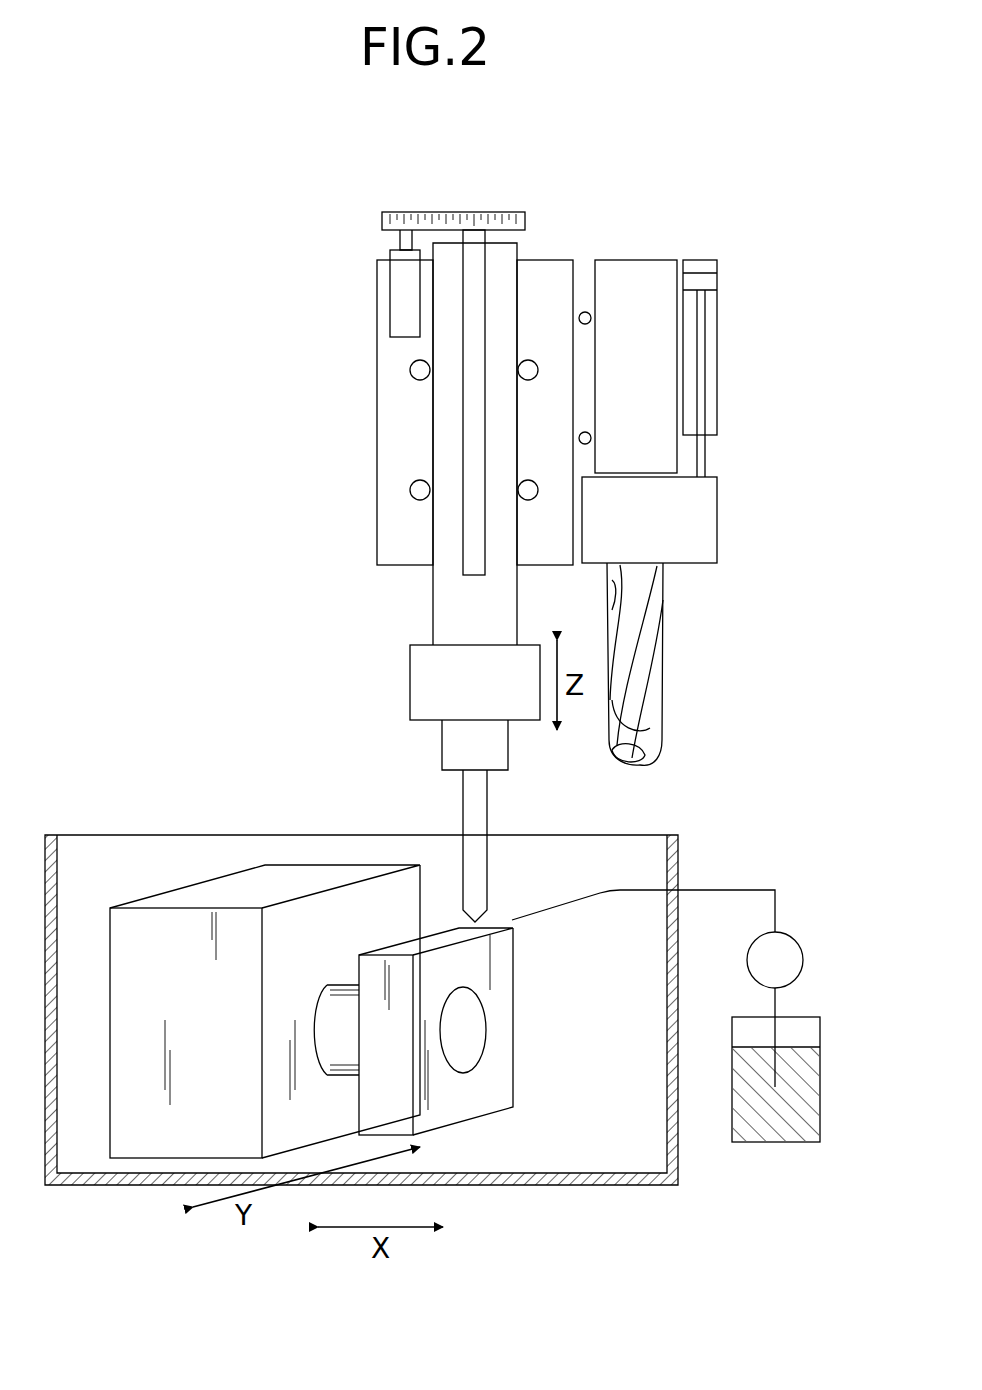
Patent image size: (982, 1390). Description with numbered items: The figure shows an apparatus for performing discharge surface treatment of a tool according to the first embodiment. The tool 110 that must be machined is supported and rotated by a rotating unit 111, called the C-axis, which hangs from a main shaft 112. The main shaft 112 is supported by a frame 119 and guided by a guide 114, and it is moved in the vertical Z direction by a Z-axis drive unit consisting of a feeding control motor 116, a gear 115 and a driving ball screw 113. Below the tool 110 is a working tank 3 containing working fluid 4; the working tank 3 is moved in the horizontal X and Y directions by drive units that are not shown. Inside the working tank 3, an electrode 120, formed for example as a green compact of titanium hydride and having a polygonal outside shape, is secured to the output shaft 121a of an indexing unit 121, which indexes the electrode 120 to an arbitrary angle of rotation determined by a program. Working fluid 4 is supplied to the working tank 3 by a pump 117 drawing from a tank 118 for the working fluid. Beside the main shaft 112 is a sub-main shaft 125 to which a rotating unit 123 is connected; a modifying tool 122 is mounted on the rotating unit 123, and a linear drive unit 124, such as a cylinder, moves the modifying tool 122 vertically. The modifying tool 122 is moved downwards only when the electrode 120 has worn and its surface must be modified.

The working tank 3 is at (570, 1187).
The working fluid 4 is at (757, 1125).
The tool 110 is at (480, 800).
The rotating unit 111 is at (423, 680).
The main shaft 112 is at (448, 608).
The driving ball screw 113 is at (480, 258).
The guide 114 is at (418, 370).
The gear 115 is at (474, 212).
The feeding control motor 116 is at (400, 300).
The pump 117 is at (787, 948).
The tank for the working fluid 118 is at (797, 1148).
The frame 119 is at (400, 447).
The electrode 120 is at (503, 1045).
The indexing unit 121 is at (117, 950).
The output shaft 121a is at (326, 1005).
The modifying tool 122 is at (647, 672).
The rotating unit 123 is at (705, 516).
The linear drive unit 124 is at (718, 350).
The sub-main shaft 125 is at (652, 268).